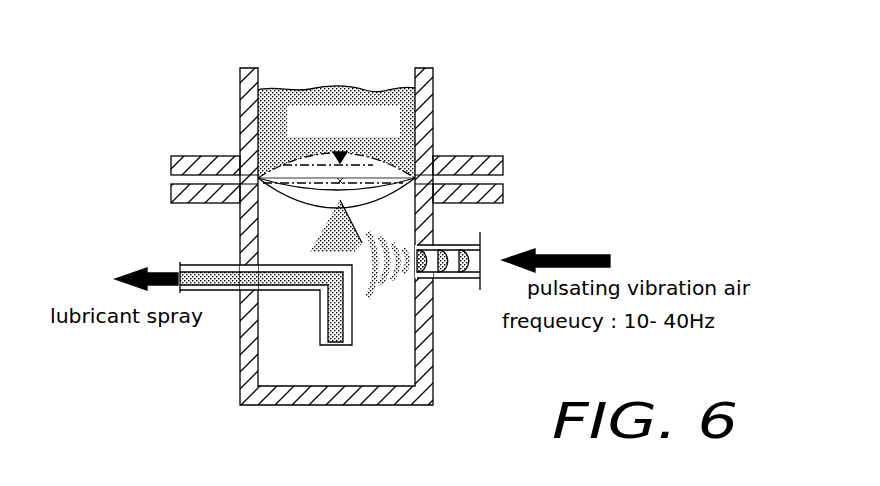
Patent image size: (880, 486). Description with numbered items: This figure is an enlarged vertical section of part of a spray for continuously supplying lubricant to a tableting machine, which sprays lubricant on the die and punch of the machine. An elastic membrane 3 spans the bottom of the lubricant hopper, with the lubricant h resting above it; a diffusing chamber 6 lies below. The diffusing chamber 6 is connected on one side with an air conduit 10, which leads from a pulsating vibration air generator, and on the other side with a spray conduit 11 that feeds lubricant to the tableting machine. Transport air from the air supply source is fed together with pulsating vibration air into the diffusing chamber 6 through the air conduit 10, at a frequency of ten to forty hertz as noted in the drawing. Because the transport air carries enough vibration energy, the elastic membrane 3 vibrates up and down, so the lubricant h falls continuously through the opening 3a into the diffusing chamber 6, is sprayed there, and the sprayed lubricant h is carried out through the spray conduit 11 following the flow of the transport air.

The elastic membrane 3 is at (396, 178).
The nozzle opening 3a is at (347, 210).
The diffusing chamber 6 is at (371, 372).
The air conduit 10 is at (459, 255).
The spray conduit 11 is at (204, 284).
The lubricant h is at (404, 88).